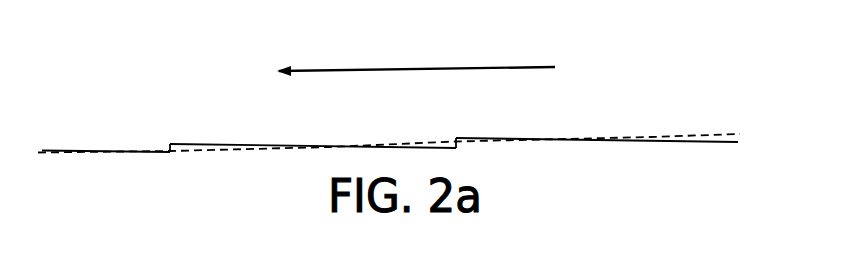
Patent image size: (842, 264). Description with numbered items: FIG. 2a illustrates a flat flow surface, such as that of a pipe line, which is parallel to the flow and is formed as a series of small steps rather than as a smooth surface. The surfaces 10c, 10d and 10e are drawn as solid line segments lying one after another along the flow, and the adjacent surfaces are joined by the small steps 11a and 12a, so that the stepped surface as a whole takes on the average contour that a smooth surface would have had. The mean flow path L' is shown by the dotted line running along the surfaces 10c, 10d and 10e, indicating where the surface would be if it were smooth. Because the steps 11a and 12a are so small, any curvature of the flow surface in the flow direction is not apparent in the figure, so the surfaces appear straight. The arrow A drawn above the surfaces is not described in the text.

The surface 10c is at (73, 150).
The step 11a is at (170, 143).
The surface 10d is at (225, 142).
The step 12a is at (457, 137).
The surface 10e is at (683, 145).
The mean flow path L' is at (390, 119).
The direction of movement A is at (392, 68).